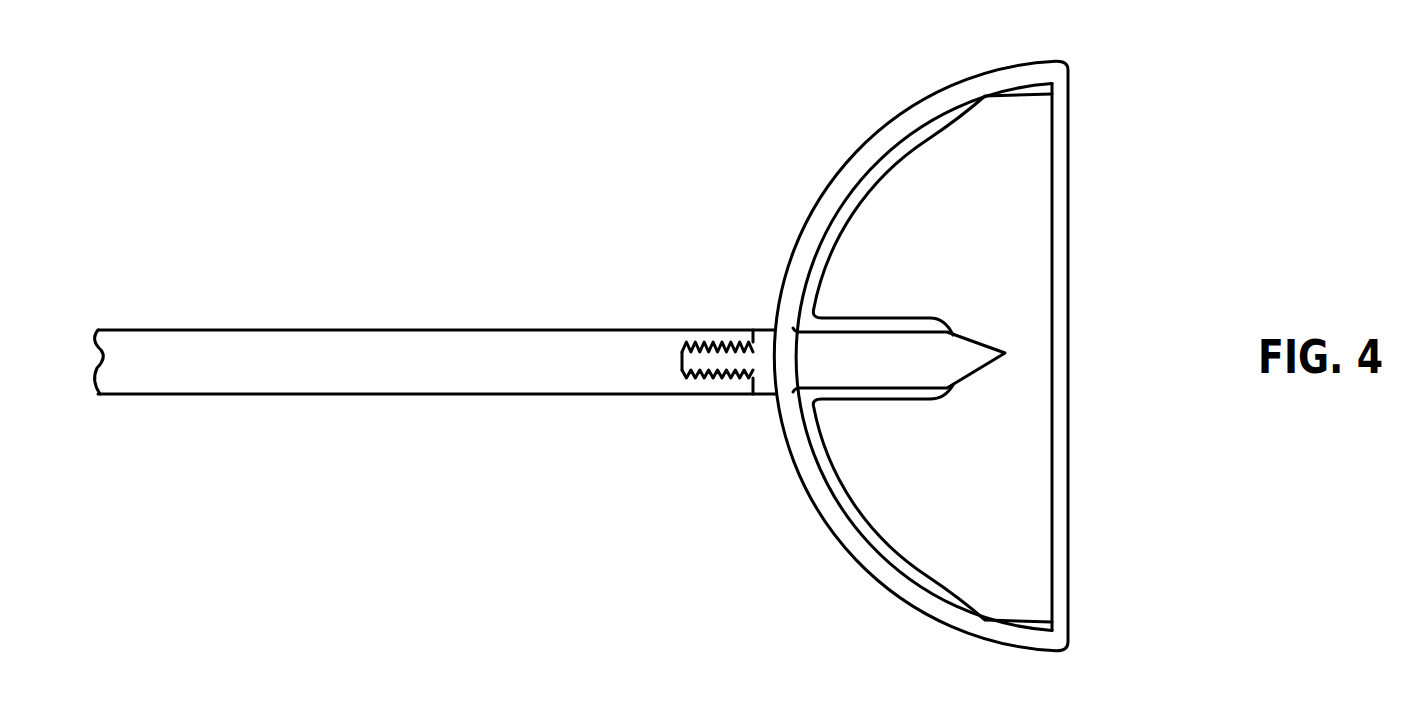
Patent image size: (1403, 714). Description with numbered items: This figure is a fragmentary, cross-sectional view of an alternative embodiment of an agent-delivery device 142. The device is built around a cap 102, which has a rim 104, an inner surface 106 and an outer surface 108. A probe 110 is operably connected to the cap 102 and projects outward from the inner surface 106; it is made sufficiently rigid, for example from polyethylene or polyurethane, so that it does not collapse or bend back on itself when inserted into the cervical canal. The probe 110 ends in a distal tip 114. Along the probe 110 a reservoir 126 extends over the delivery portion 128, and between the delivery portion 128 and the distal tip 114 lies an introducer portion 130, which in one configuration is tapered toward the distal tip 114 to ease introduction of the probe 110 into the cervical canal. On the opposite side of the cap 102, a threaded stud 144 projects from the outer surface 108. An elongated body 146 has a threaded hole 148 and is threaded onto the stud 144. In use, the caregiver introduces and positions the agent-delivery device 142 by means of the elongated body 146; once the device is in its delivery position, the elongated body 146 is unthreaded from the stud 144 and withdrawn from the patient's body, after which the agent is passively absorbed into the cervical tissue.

The cap 102 is at (903, 110).
The rim 104 is at (1071, 243).
The inner surface 106 is at (999, 94).
The outer surface 108 is at (803, 489).
The probe 110 is at (882, 332).
The distal tip 114 is at (1006, 360).
The reservoir 126 is at (833, 192).
The delivery portion 128 is at (883, 400).
The introducer portion 130 is at (988, 370).
The agent-delivery device 142 is at (602, 90).
The threaded stud 144 is at (682, 359).
The elongated body 146 is at (313, 394).
The threaded hole 148 is at (731, 348).